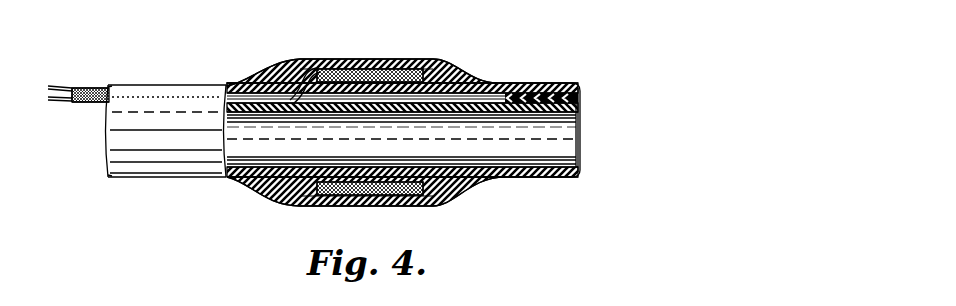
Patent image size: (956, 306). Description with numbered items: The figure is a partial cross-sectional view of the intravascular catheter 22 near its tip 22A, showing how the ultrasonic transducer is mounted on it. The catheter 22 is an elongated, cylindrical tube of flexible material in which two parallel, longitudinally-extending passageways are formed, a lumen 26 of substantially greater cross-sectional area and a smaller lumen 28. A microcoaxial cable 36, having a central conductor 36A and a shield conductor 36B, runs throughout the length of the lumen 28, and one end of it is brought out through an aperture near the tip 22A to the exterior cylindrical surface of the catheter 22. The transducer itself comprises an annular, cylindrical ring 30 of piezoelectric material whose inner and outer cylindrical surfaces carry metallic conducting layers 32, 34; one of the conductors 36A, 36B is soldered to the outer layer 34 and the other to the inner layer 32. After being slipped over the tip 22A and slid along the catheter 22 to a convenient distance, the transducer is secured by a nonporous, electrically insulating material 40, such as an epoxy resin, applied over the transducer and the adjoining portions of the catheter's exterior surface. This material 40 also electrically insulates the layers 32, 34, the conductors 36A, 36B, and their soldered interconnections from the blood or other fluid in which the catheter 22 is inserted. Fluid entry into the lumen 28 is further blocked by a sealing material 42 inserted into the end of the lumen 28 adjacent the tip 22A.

The intravascular catheter 22 is at (173, 98).
The tip 22A is at (577, 171).
The lumen 26 is at (572, 143).
The lumen 28 is at (492, 87).
The annular cylindrical ring 30 is at (425, 62).
The inner conducting layer 32 is at (362, 66).
The outer conducting layer 34 is at (397, 60).
The microcoaxial cable 36 is at (90, 92).
The central conductor 36A is at (53, 101).
The shield conductor 36B is at (60, 83).
The insulating material 40 is at (298, 63).
The sealing material 42 is at (560, 83).